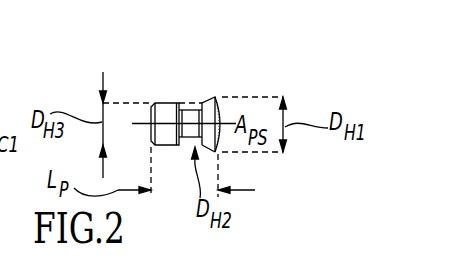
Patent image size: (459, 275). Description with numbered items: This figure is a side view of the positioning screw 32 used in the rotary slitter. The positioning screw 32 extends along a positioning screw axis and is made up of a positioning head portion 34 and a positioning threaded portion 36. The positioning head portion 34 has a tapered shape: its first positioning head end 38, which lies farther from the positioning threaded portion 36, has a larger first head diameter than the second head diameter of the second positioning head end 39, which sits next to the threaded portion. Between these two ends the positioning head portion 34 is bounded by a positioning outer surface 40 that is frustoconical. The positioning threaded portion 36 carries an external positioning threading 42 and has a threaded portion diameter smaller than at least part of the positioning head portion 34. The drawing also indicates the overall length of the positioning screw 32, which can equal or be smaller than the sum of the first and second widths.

The positioning screw 32 is at (238, 75).
The positioning head portion 34 is at (209, 87).
The positioning threaded portion 36 is at (165, 88).
The first positioning head end 38 is at (221, 84).
The second positioning head end 39 is at (200, 91).
The positioning outer surface 40 is at (205, 148).
The external positioning threading 42 is at (165, 146).